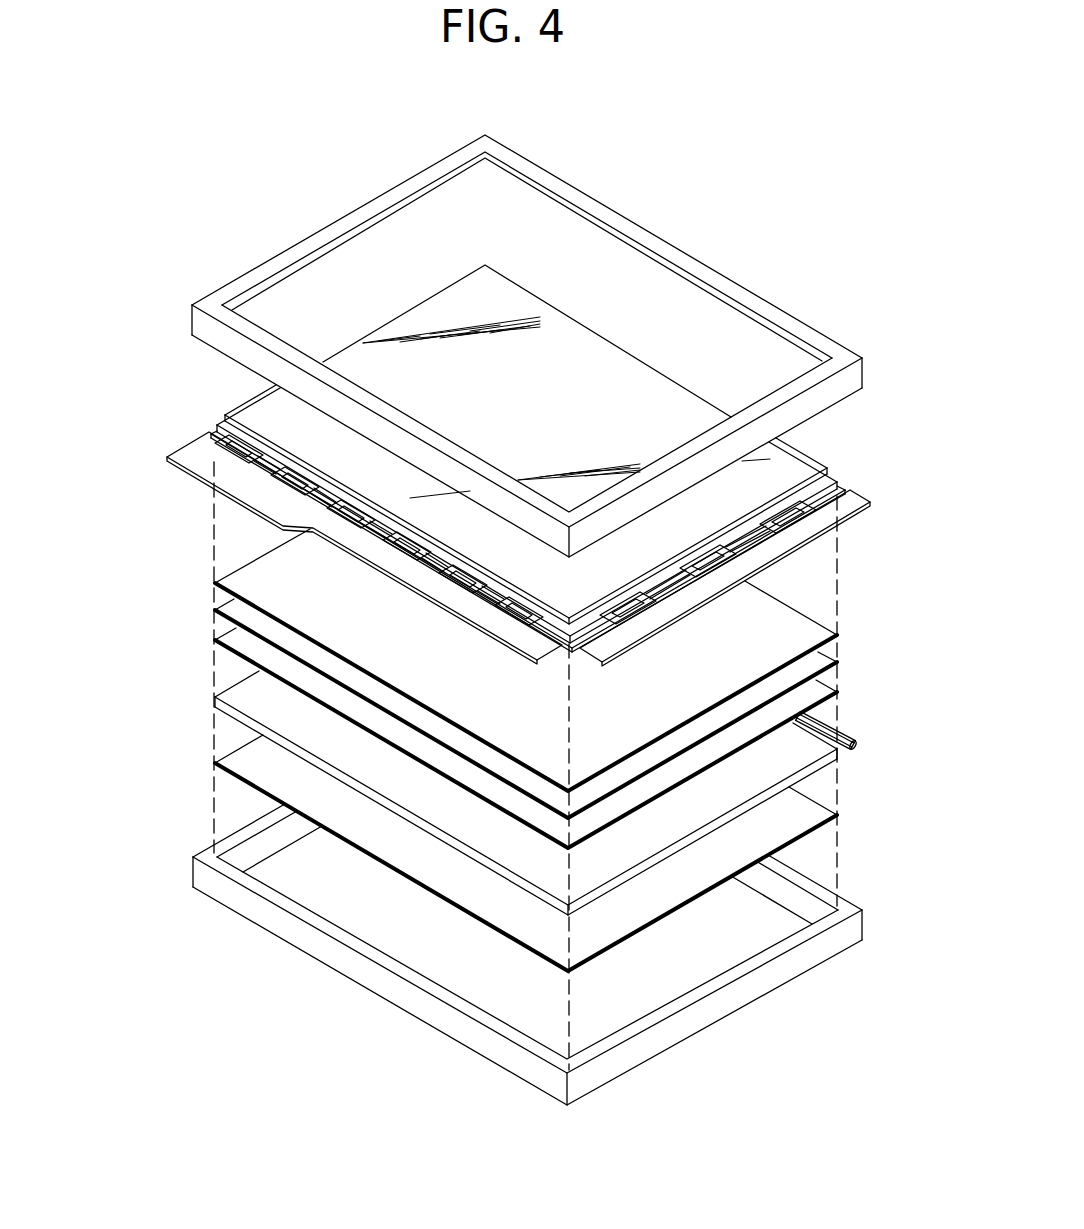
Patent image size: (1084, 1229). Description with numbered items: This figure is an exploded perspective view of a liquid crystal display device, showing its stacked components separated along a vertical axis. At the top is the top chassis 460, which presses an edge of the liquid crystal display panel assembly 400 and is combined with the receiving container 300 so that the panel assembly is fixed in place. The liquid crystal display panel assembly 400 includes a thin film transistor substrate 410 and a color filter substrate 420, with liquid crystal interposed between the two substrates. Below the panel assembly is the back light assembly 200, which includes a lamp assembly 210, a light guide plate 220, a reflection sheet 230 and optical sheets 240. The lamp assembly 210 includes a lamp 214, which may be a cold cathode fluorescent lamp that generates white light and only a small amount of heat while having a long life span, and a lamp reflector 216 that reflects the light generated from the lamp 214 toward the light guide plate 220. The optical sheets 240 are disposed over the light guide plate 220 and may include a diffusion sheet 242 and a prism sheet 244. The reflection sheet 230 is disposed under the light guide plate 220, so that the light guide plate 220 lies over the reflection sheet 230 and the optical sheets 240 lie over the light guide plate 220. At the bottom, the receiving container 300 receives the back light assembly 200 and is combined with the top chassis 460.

The liquid crystal display panel assembly 400 is at (736, 247).
The top chassis 460 is at (863, 372).
The color filter substrate 420 is at (800, 463).
The thin film transistor substrate 410 is at (829, 482).
The back light assembly 200 is at (104, 580).
The optical sheets 240 is at (154, 583).
The prism sheet 244 is at (210, 580).
The diffusion sheet 242 is at (217, 638).
The light guide plate 220 is at (217, 692).
The reflection sheet 230 is at (217, 762).
The lamp assembly 210 is at (910, 706).
The lamp reflector 216 is at (848, 729).
The lamp 214 is at (855, 748).
The receiving container 300 is at (414, 963).